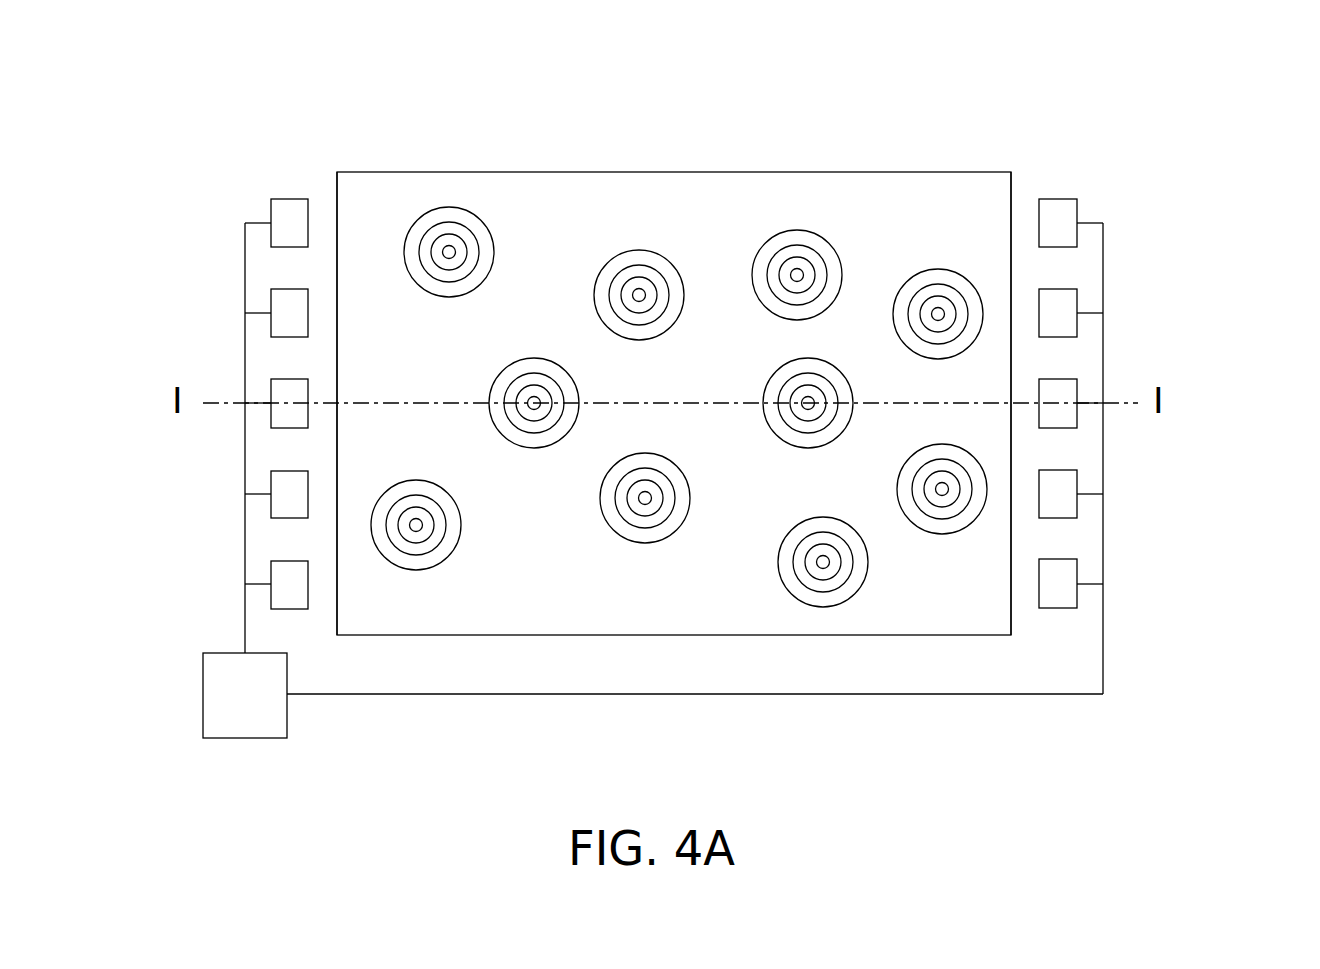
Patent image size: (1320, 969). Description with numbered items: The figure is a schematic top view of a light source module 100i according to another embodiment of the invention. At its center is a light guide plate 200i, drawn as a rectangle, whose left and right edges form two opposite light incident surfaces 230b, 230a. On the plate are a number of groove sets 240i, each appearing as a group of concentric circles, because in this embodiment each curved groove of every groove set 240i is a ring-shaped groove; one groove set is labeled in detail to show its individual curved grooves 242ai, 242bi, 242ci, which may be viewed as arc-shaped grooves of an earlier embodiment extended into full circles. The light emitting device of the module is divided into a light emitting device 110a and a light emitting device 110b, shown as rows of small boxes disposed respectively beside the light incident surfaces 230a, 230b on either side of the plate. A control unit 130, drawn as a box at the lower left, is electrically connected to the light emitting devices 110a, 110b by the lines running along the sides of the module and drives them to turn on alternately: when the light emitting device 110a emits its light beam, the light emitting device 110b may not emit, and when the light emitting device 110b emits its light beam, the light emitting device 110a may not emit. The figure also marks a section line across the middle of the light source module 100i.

The light source module 100i is at (1200, 755).
The light guide plate 200i is at (554, 220).
The light incident surface 230b is at (337, 187).
The light incident surface 230a is at (1012, 187).
The groove set 240i is at (689, 309).
The curved groove 242ai is at (762, 260).
The curved groove 242bi is at (802, 248).
The curved groove 242ci is at (893, 183).
The light emitting device 110b is at (292, 217).
The light emitting device 110a is at (1057, 216).
The control unit 130 is at (227, 703).